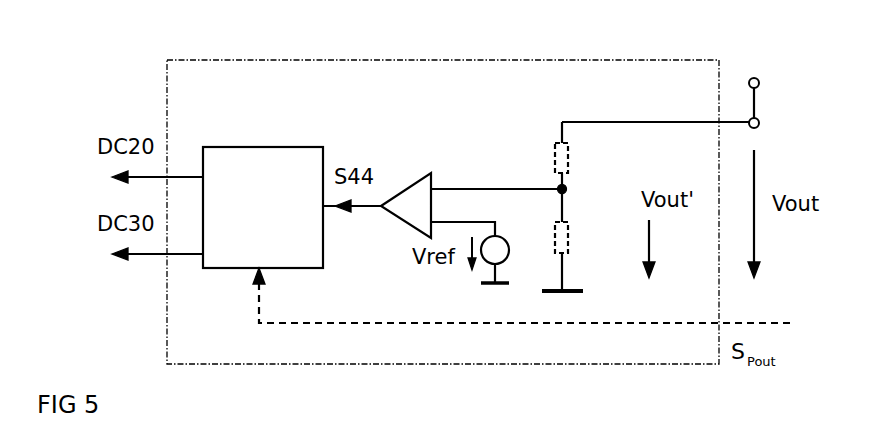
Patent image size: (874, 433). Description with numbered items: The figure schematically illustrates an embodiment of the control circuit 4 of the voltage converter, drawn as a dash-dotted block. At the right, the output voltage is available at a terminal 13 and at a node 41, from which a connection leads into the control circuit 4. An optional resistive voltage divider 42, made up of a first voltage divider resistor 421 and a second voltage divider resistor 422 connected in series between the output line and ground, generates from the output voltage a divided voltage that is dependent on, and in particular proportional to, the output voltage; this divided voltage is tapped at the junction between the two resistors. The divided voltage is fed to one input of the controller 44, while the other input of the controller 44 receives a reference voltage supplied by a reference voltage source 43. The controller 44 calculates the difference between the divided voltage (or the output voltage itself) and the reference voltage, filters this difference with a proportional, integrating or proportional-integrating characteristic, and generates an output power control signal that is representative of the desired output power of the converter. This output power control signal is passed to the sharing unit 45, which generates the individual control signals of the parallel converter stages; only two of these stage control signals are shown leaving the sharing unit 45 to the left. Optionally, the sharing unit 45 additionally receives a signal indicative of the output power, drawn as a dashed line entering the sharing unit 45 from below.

The control circuit 4 is at (341, 58).
The output terminal 13 is at (757, 77).
The terminal connection node 41 is at (760, 121).
The resistive voltage divider 42 is at (575, 185).
The first voltage divider resistor 421 is at (568, 164).
The second voltage divider resistor 422 is at (568, 238).
The reference voltage source 43 is at (510, 244).
The controller 44 is at (412, 174).
The sharing unit 45 is at (262, 146).